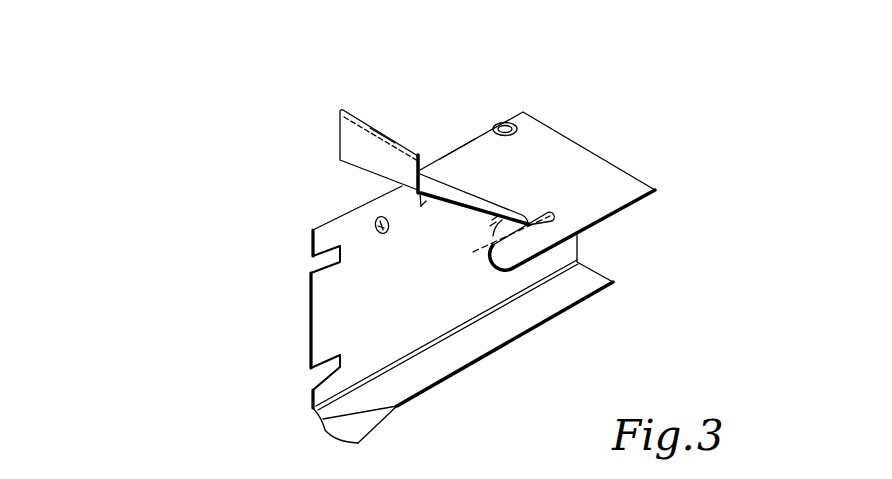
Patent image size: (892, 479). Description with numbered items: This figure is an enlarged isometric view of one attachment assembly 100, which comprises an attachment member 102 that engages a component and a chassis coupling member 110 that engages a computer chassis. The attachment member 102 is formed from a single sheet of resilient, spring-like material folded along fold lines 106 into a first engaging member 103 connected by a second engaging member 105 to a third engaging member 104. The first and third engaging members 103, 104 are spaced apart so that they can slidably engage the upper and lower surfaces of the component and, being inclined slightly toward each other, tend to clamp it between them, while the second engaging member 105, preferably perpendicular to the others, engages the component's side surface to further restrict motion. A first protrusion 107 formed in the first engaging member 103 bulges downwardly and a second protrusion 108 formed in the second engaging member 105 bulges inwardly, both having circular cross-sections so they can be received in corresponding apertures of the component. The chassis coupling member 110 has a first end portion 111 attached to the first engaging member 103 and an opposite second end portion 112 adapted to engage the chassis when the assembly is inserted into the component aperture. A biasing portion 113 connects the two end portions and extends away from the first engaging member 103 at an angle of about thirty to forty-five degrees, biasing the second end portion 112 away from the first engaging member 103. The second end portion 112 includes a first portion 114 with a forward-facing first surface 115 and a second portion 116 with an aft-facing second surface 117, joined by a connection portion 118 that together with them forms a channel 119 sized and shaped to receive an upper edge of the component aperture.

The attachment assembly 100 is at (198, 235).
The attachment member 102 is at (298, 338).
The first engaging member 103 is at (580, 143).
The third engaging member 104 is at (489, 356).
The second engaging member 105 is at (307, 245).
The fold lines 106 is at (308, 228).
The first protrusion 107 is at (507, 128).
The second protrusion 108 is at (380, 234).
The chassis coupling member 110 is at (562, 242).
The first end portion 111 is at (522, 199).
The second end portion 112 is at (330, 122).
The biasing portion 113 is at (490, 227).
The first portion 114 is at (492, 220).
The first surface 115 is at (457, 148).
The second portion 116 is at (396, 123).
The second surface 117 is at (426, 147).
The connection portion 118 is at (427, 192).
The channel 119 is at (437, 207).